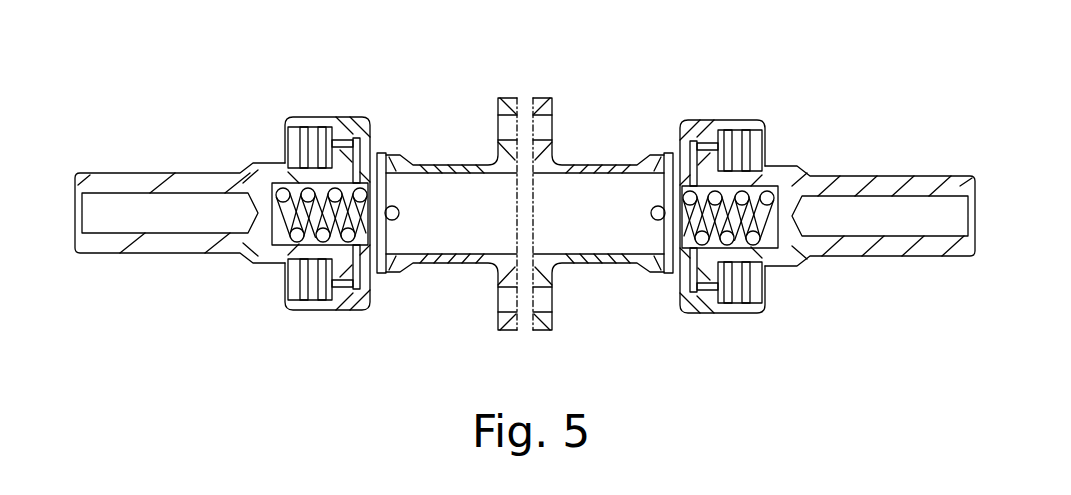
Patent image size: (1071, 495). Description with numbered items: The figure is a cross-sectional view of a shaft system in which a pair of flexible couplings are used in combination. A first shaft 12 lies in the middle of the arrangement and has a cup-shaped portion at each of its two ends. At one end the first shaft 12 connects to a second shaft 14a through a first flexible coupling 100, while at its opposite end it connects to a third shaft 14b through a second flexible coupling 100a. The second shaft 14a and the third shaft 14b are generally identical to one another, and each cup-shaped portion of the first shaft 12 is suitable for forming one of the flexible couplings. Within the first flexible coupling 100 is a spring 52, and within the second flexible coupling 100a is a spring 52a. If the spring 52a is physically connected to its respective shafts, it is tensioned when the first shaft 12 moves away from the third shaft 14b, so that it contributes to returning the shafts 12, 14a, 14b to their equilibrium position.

The first shaft 12 is at (436, 267).
The second shaft 14a is at (880, 260).
The third shaft 14b is at (170, 256).
The spring 52 is at (770, 158).
The spring 52a is at (374, 151).
The first flexible coupling 100 is at (710, 86).
The second flexible coupling 100a is at (318, 84).